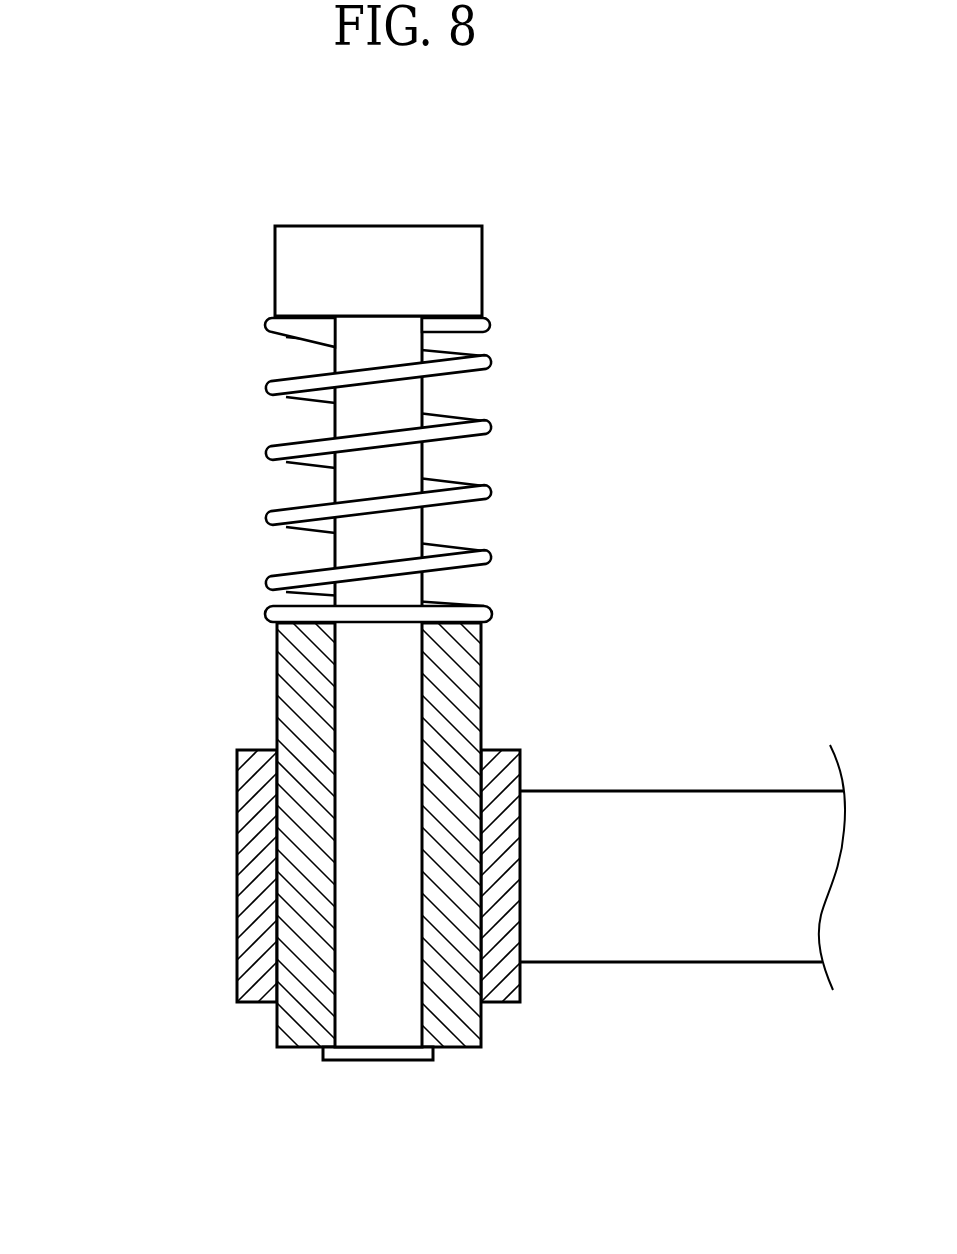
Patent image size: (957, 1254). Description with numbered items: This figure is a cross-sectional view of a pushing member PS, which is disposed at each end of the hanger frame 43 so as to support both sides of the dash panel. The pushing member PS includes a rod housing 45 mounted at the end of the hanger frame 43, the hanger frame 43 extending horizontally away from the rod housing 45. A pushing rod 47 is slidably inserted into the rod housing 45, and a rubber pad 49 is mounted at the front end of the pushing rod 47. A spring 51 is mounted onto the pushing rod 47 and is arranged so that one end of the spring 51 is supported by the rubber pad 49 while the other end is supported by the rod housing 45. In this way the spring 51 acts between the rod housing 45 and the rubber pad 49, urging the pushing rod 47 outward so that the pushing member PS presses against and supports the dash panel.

The hanger frame 43 is at (647, 953).
The rod housing 45 is at (512, 762).
The pushing rod 47 is at (398, 680).
The rubber pad 49 is at (477, 268).
The spring 51 is at (490, 426).
The pushing member PS is at (333, 636).